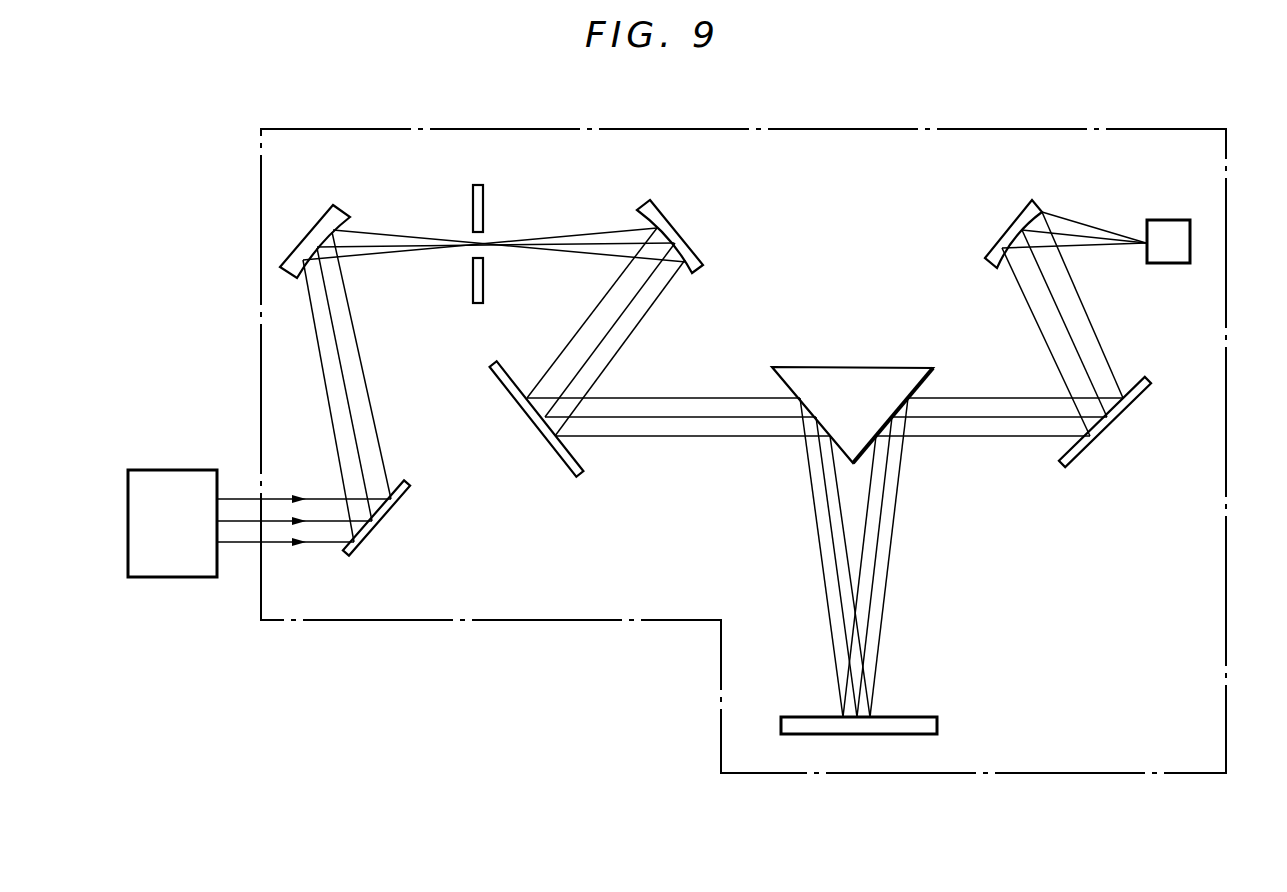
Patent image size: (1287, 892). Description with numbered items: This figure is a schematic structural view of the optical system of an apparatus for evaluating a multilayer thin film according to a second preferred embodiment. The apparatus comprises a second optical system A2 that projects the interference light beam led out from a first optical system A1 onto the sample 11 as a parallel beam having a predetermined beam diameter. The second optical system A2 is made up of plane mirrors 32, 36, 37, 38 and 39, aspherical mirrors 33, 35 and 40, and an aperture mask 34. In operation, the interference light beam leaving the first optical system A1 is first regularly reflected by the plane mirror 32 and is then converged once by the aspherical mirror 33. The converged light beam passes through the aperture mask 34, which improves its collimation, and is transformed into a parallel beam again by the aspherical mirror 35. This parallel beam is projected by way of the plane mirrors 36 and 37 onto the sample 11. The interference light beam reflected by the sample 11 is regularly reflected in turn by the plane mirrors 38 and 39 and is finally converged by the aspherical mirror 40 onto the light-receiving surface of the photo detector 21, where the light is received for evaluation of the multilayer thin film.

The first optical system A1 is at (160, 470).
The second optical system A2 is at (955, 129).
The sample 11 is at (920, 734).
The photo detector 21 is at (1190, 245).
The plane mirror 32 is at (370, 532).
The aspherical mirror 33 is at (317, 225).
The aperture mask 34 is at (485, 207).
The aspherical mirror 35 is at (673, 213).
The plane mirror 36 is at (545, 443).
The plane mirror 37 is at (780, 378).
The plane mirror 38 is at (927, 378).
The plane mirror 39 is at (1107, 433).
The aspherical mirror 40 is at (1017, 220).